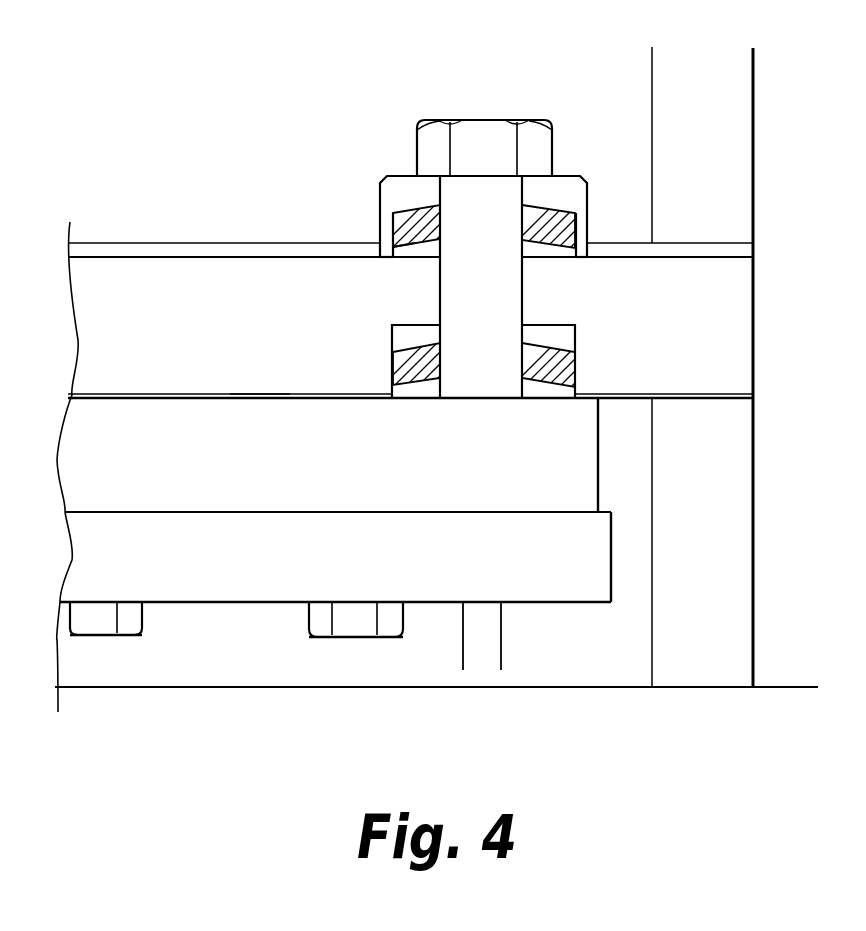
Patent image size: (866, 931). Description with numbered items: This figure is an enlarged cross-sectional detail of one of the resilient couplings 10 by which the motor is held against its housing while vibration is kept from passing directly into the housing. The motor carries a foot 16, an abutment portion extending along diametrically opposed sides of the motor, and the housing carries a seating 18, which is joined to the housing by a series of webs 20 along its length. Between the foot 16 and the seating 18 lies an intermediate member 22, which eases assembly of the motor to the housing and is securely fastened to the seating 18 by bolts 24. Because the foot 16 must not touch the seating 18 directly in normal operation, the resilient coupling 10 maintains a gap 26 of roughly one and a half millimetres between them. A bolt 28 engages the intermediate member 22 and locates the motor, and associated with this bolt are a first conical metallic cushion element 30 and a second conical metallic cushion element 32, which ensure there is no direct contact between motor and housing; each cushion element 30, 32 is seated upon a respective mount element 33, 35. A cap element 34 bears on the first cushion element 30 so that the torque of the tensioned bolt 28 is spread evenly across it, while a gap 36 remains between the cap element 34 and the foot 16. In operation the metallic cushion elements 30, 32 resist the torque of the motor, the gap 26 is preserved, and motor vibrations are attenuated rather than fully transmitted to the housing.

The resilient coupling 10 is at (347, 176).
The motor foot 16 is at (693, 317).
The seating 18 is at (590, 568).
The web 20 is at (492, 632).
The intermediate member 22 is at (580, 475).
The bolt 24 is at (363, 620).
The gap 26 is at (260, 393).
The bolt 28 is at (497, 148).
The first conical metallic cushion element 30 is at (553, 227).
The second conical metallic cushion element 32 is at (563, 368).
The mount element 33 is at (405, 387).
The cap element 34 is at (561, 192).
The mount element 35 is at (403, 245).
The gap 36 is at (584, 257).